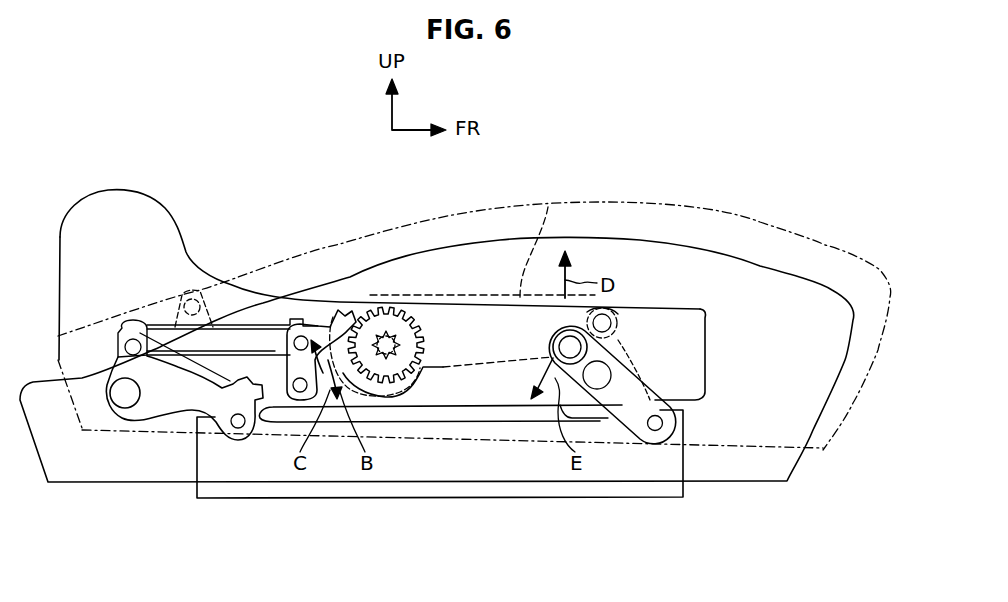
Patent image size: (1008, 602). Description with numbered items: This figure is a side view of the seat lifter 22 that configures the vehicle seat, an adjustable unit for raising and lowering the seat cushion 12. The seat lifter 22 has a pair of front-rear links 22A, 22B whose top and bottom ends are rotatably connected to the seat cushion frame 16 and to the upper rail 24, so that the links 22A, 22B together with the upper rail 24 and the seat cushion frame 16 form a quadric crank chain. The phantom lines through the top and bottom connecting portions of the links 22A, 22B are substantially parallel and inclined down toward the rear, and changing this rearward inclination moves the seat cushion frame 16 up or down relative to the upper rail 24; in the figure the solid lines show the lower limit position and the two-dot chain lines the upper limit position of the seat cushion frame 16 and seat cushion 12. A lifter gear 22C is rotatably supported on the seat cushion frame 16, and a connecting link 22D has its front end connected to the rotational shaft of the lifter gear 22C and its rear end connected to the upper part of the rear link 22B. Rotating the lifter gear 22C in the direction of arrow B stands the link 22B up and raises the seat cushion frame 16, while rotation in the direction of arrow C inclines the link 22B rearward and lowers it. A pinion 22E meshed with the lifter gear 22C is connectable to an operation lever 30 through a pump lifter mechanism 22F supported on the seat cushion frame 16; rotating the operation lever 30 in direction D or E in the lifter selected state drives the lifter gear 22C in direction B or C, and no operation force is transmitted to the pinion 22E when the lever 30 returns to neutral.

The seat cushion 12 is at (605, 240).
The operation lever 30 is at (548, 207).
The seat lifter 22 is at (437, 284).
The front link 22A is at (650, 390).
The rear link 22B is at (222, 360).
The lifter gear 22C is at (323, 330).
The connecting link 22D is at (257, 340).
The pinion 22E is at (398, 347).
The pump lifter mechanism 22F is at (403, 385).
The seat cushion frame 16 is at (513, 395).
The upper rail 24 is at (588, 488).